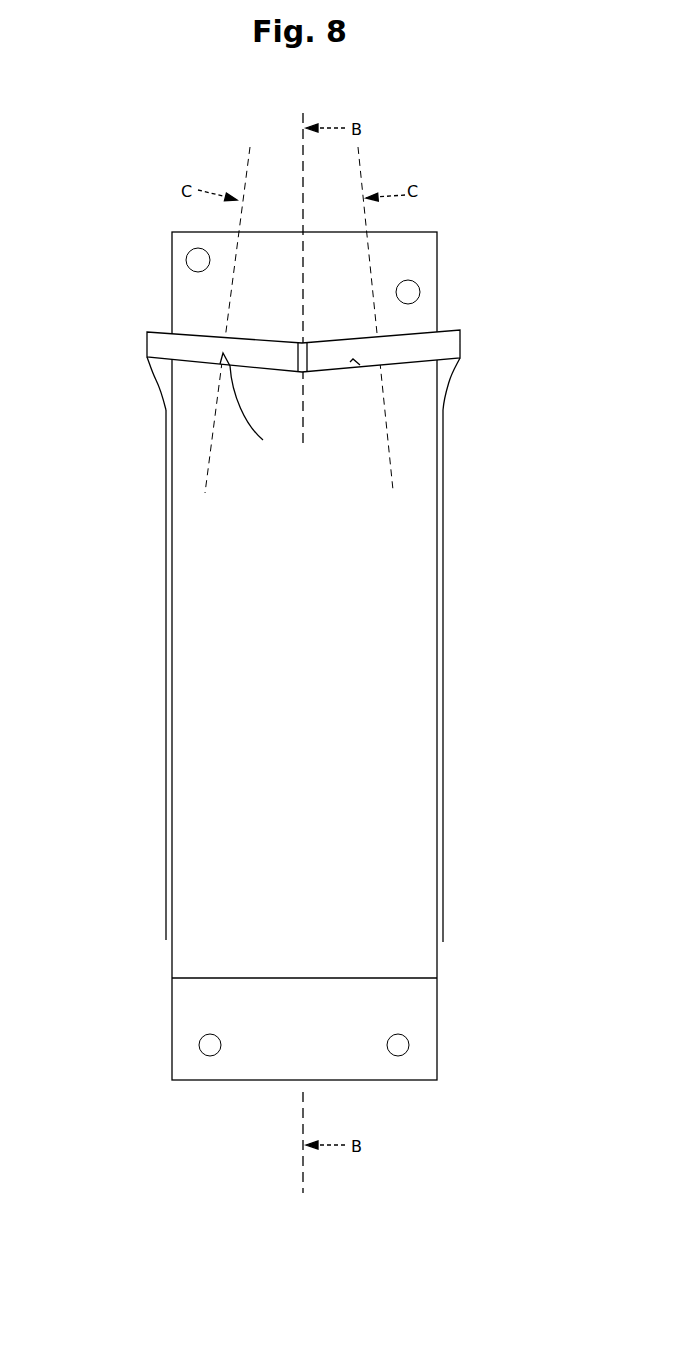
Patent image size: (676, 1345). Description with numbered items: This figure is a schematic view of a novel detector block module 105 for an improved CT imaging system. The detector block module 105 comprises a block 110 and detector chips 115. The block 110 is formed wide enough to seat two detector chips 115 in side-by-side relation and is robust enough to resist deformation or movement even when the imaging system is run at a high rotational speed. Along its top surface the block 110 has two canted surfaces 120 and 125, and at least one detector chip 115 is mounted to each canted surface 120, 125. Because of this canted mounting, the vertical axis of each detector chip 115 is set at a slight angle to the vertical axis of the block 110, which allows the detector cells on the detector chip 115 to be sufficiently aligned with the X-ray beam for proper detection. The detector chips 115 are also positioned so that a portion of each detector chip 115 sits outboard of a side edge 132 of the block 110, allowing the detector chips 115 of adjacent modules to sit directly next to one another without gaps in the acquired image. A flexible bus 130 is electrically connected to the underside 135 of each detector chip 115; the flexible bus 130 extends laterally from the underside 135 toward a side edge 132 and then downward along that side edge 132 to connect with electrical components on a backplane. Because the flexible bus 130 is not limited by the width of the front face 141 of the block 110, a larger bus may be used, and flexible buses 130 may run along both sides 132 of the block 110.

The detector block module 105 is at (455, 204).
The block 110 is at (352, 729).
The detector chip 115 is at (153, 329).
The canted surface 120 is at (263, 440).
The canted surface 125 is at (352, 362).
The flexible bus 130 is at (142, 388).
The side edge 132 is at (437, 645).
The underside 135 is at (199, 372).
The front face 141 is at (303, 804).